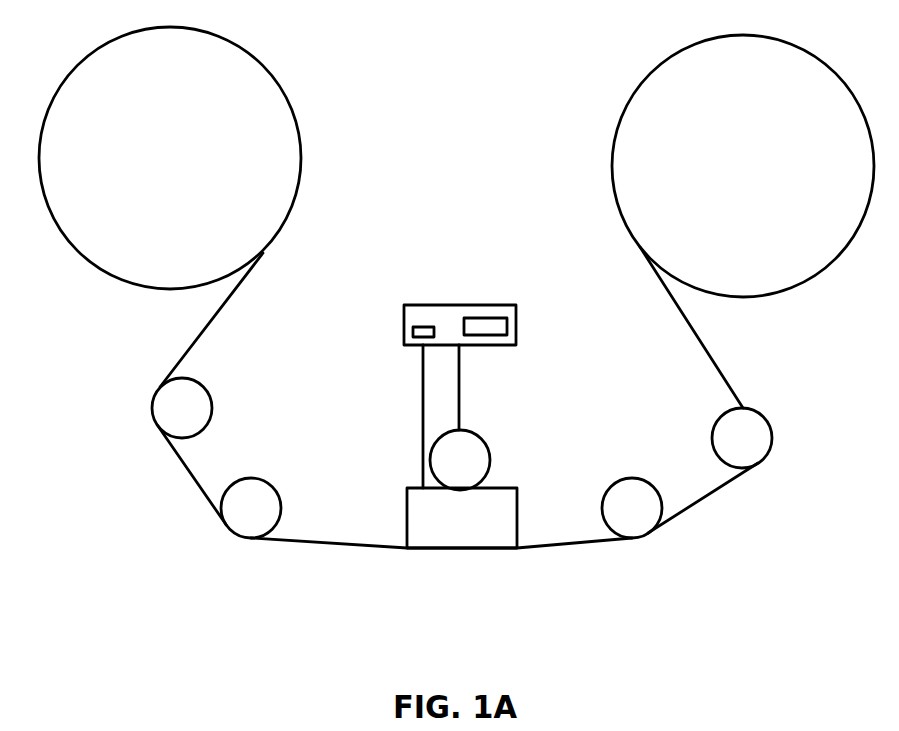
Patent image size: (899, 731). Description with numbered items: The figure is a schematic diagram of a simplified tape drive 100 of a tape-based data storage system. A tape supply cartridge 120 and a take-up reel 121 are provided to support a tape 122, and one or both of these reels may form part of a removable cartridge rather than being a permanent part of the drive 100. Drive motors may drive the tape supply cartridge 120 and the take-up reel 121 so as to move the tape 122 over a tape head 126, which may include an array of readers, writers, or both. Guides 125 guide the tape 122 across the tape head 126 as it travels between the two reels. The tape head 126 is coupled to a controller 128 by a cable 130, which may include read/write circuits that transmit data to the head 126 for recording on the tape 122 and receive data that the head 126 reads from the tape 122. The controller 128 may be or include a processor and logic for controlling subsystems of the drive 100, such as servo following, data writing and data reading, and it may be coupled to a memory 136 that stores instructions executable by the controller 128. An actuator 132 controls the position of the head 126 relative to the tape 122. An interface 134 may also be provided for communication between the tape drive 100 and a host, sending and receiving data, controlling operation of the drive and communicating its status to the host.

The tape drive 100 is at (130, 337).
The tape supply cartridge 120 is at (297, 120).
The take-up reel 121 is at (834, 264).
The tape 122 is at (330, 547).
The guides 125 is at (251, 478).
The tape head 126 is at (517, 515).
The controller 128 is at (459, 305).
The cable 130 is at (423, 457).
The actuator 132 is at (483, 438).
The interface 134 is at (495, 318).
The memory 136 is at (423, 327).